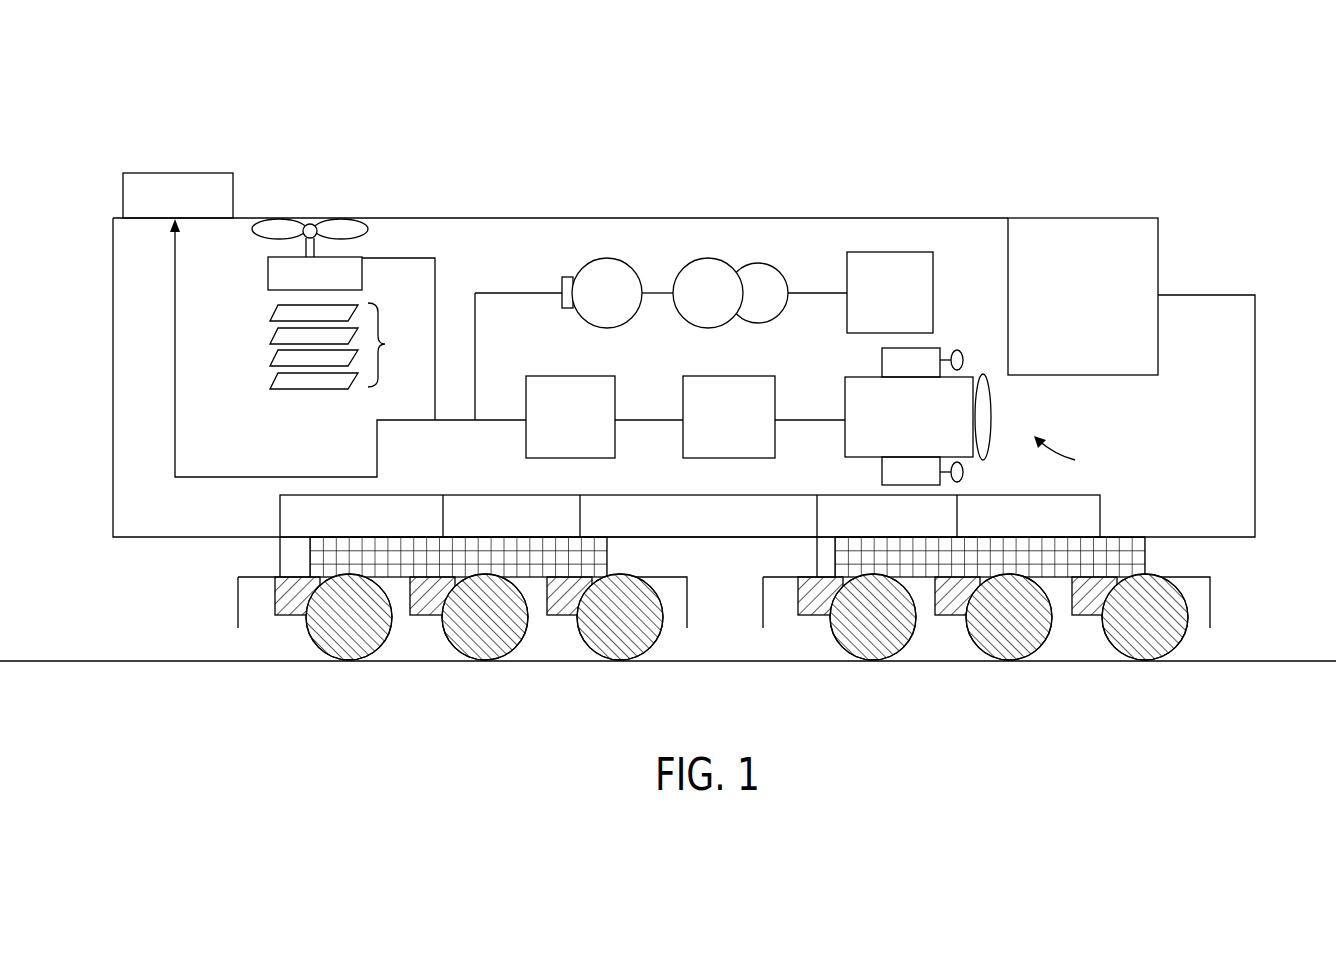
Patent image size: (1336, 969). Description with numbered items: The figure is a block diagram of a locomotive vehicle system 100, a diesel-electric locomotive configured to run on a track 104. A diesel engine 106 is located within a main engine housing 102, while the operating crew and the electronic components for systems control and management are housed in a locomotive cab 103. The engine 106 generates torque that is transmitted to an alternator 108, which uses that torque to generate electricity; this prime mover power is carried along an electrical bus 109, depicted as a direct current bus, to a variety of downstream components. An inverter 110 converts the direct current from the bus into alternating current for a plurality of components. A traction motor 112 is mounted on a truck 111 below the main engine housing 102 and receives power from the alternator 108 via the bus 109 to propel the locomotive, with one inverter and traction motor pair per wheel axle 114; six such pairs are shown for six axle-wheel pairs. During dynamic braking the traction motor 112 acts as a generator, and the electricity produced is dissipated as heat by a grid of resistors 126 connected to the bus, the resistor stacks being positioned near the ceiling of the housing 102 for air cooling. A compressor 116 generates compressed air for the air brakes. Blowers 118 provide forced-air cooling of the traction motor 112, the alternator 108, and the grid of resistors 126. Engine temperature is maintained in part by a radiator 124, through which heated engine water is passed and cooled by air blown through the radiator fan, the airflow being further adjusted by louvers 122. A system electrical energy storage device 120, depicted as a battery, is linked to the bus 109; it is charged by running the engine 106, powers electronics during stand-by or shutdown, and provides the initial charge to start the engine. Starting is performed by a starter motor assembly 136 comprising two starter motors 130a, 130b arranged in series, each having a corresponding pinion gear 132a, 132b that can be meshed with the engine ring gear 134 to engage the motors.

The locomotive vehicle system 100 is at (93, 97).
The main engine housing 102 is at (988, 218).
The locomotive cab 103 is at (1083, 223).
The track 104 is at (1265, 660).
The diesel engine 106 is at (855, 410).
The alternator 108 is at (770, 376).
The electrical bus 109 is at (630, 420).
The inverter 110 is at (548, 375).
The truck 111 is at (612, 577).
The traction motor 112 is at (292, 617).
The wheel axle 114 is at (375, 655).
The compressor 116 is at (640, 274).
The blowers 118 is at (708, 257).
The system electrical energy storage device 120 is at (900, 252).
The louvers 122 is at (351, 338).
The radiator 124 is at (326, 217).
The grid of resistors 126 is at (183, 172).
The starter motor 130a is at (890, 372).
The starter motor 130b is at (890, 462).
The pinion gear 132a is at (957, 350).
The pinion gear 132b is at (962, 474).
The engine ring gear 134 is at (991, 432).
The starter motor assembly 136 is at (1070, 455).